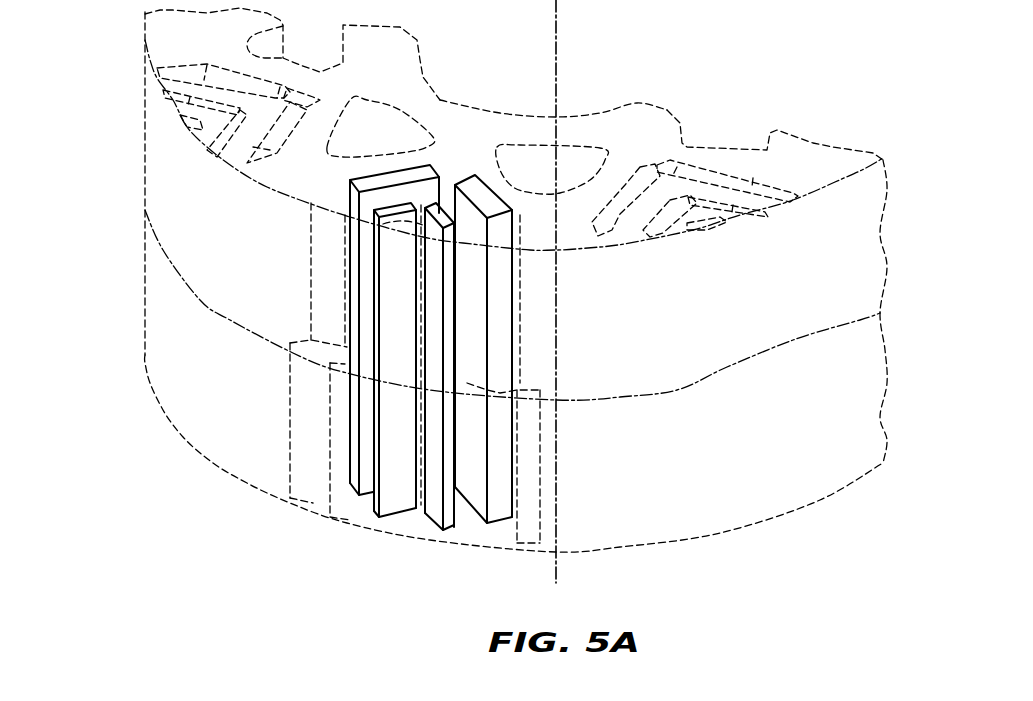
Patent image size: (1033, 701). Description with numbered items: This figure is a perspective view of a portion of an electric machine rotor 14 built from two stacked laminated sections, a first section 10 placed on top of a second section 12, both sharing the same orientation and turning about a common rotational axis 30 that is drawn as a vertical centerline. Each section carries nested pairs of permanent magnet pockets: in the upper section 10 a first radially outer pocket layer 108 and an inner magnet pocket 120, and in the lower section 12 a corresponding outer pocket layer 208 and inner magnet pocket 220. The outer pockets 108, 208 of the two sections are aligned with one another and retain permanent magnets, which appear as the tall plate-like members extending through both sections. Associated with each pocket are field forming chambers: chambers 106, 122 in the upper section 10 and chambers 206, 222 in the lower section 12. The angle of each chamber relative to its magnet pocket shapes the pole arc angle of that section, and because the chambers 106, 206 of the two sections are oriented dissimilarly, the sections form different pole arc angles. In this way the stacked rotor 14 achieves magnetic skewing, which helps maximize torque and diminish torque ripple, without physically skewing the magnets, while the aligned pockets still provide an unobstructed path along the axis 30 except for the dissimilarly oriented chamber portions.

The section 10 is at (755, 269).
The section 12 is at (756, 418).
The rotor 14 is at (122, 110).
The rotational axis 30 is at (558, 70).
The chamber 106 is at (318, 203).
The permanent magnet pocket 108 is at (396, 170).
The magnet pocket 120 is at (397, 207).
The chamber 122 is at (347, 296).
The chamber 206 is at (291, 428).
The permanent magnet pocket 208 is at (364, 419).
The magnet pocket 220 is at (431, 533).
The chamber 222 is at (352, 523).